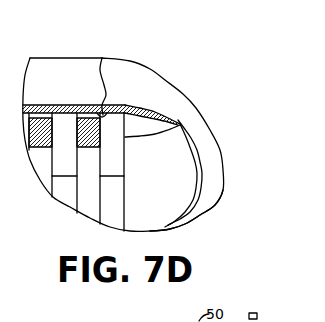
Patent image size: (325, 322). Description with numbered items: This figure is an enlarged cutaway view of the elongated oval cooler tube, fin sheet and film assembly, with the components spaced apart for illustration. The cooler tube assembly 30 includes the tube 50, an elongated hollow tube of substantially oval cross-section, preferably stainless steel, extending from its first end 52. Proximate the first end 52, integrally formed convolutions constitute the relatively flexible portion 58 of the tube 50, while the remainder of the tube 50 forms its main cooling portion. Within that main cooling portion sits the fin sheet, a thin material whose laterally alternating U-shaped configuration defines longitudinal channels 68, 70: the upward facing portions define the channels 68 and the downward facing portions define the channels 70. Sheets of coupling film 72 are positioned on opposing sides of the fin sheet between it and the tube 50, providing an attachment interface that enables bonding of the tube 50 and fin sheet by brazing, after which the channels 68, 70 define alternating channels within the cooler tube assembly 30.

The cooler tube assembly 30 is at (200, 68).
The tube 50 is at (248, 138).
The first end 52 is at (223, 195).
The flexible portion 58 is at (48, 78).
The channels 68 is at (215, 110).
The channels 70 is at (76, 172).
The coupling film 72 is at (103, 58).